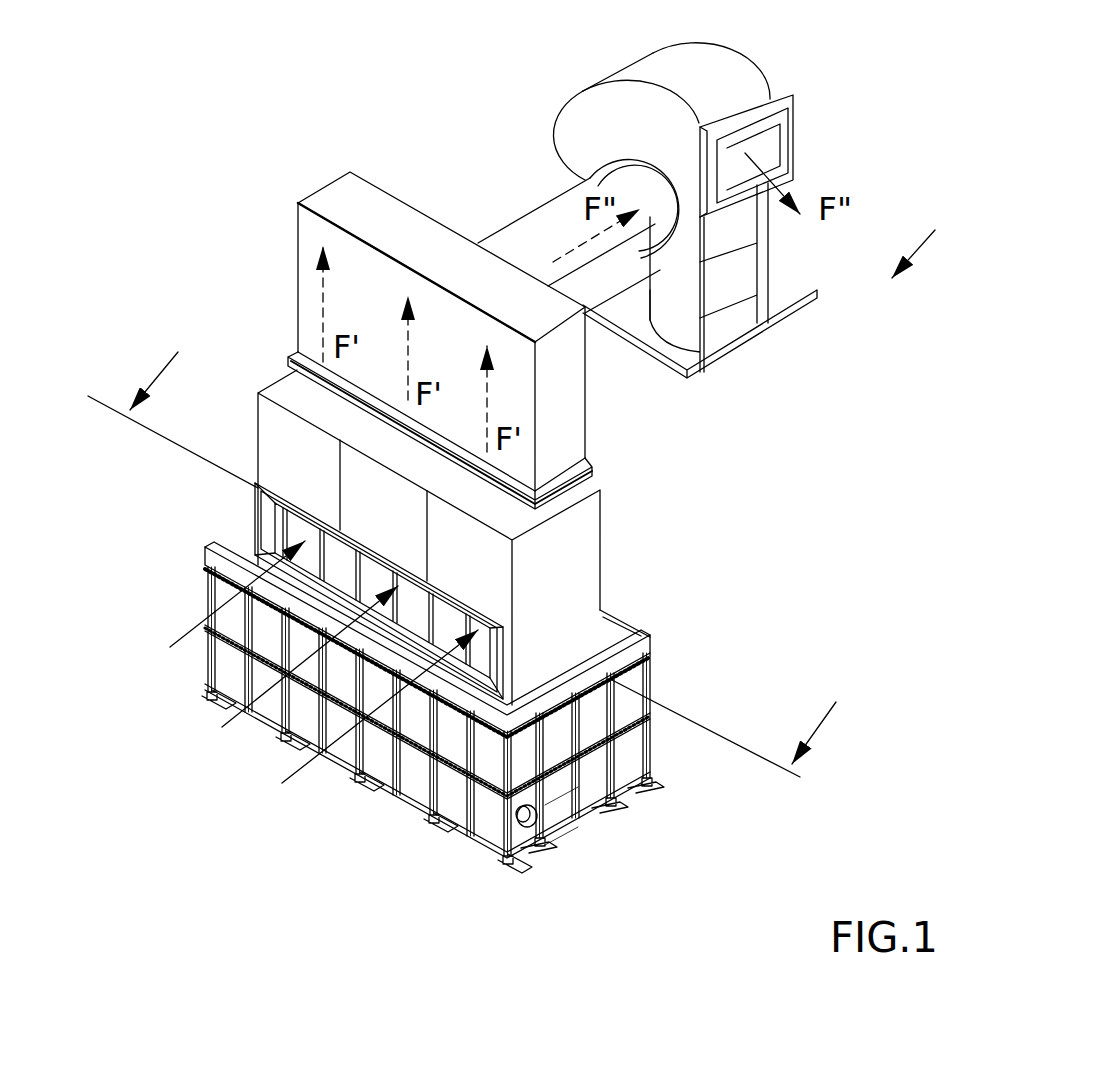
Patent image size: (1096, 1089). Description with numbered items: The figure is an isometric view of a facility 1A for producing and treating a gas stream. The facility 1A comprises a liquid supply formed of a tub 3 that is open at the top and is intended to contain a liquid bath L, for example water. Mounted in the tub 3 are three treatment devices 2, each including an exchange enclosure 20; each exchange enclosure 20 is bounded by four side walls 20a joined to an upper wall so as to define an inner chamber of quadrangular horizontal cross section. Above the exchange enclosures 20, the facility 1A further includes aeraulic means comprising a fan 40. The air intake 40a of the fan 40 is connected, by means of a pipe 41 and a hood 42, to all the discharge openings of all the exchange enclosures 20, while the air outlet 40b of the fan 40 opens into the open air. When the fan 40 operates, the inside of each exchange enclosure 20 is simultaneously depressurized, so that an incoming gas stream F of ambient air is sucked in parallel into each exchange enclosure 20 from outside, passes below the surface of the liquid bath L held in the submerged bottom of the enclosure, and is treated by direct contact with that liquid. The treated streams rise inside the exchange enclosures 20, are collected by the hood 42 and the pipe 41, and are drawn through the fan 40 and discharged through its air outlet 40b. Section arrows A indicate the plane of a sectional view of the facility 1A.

The treatment device 2 is at (262, 372).
The tub 3 is at (648, 692).
The exchange enclosure 20 is at (460, 532).
The side wall 20a is at (572, 790).
The fan 40 is at (597, 118).
The air intake 40a is at (652, 325).
The air outlet 40b is at (748, 136).
The pipe 41 is at (543, 218).
The hood 42 is at (563, 372).
The liquid bath L is at (618, 632).
The facility 1A is at (938, 234).
The section line A- A is at (475, 548).
The incoming gas stream F is at (276, 672).